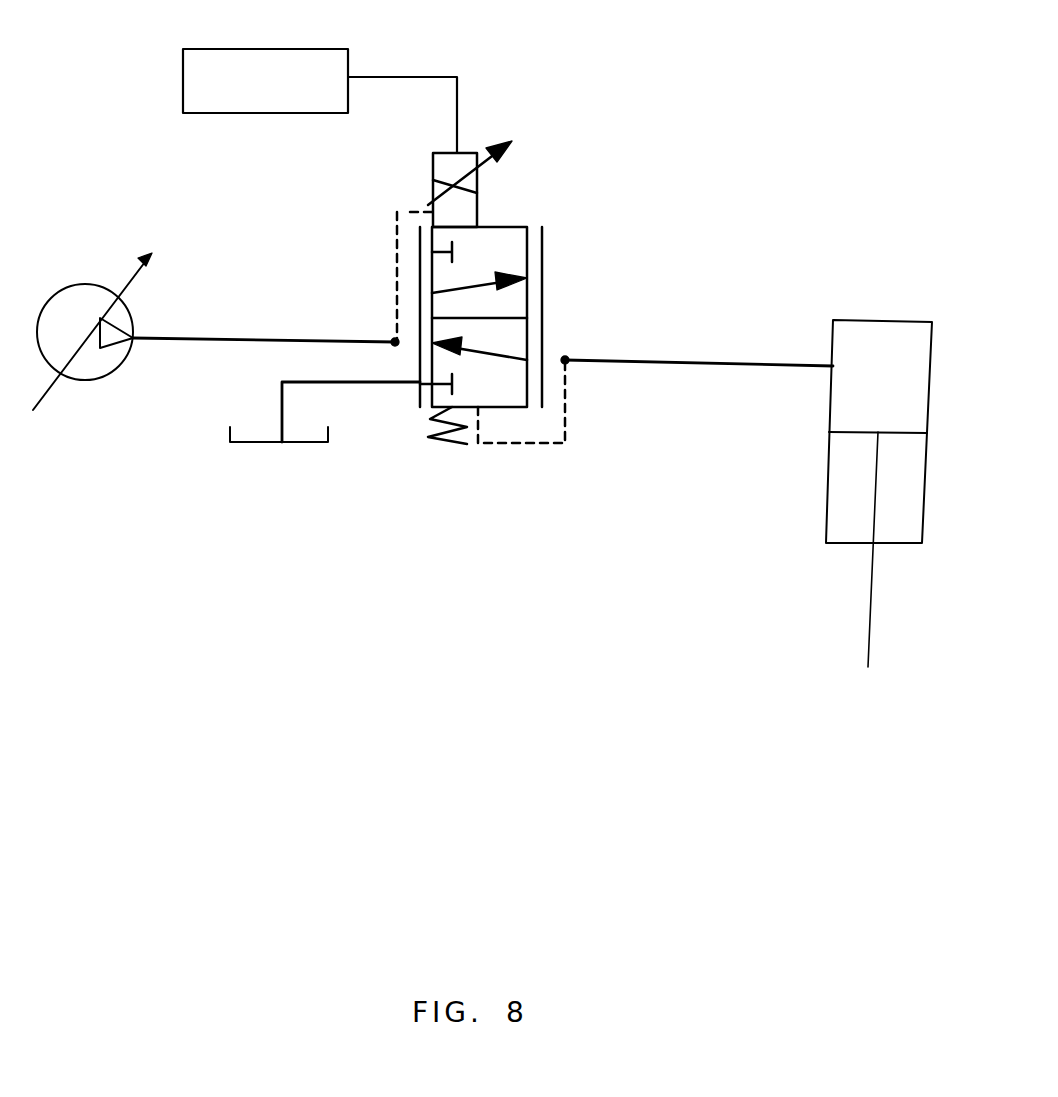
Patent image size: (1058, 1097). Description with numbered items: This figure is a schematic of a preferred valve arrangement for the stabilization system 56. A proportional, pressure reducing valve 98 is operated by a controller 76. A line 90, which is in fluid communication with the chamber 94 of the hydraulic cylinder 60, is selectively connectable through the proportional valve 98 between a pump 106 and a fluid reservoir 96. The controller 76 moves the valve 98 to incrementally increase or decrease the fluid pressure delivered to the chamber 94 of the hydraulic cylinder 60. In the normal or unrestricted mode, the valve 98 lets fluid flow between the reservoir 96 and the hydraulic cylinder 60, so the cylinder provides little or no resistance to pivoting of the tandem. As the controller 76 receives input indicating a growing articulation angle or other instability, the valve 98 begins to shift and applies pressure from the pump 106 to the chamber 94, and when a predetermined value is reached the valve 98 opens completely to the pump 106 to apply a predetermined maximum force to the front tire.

The stabilization system 56 is at (650, 118).
The controller 76 is at (315, 63).
The proportional pressure reducing valve 98 is at (560, 254).
The pump 106 is at (97, 380).
The fluid reservoir 96 is at (305, 445).
The line 90 is at (663, 360).
The hydraulic cylinder 60 is at (807, 493).
The chamber 94 is at (852, 337).